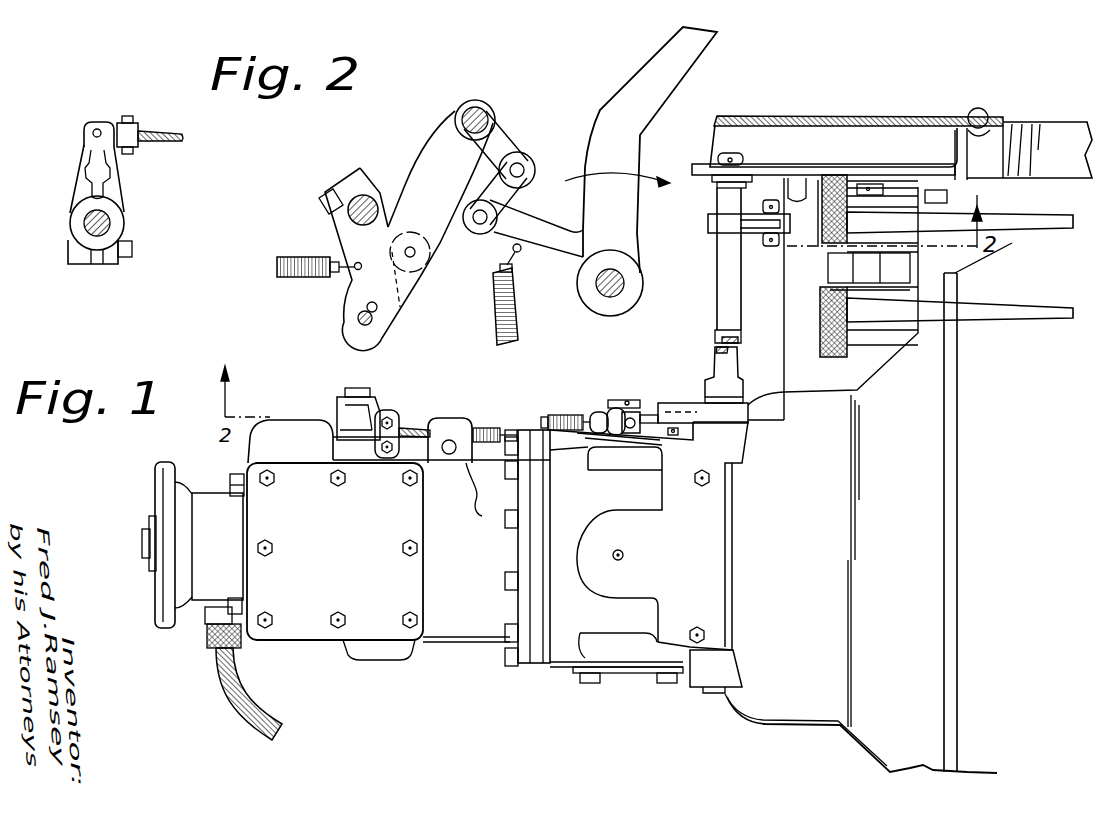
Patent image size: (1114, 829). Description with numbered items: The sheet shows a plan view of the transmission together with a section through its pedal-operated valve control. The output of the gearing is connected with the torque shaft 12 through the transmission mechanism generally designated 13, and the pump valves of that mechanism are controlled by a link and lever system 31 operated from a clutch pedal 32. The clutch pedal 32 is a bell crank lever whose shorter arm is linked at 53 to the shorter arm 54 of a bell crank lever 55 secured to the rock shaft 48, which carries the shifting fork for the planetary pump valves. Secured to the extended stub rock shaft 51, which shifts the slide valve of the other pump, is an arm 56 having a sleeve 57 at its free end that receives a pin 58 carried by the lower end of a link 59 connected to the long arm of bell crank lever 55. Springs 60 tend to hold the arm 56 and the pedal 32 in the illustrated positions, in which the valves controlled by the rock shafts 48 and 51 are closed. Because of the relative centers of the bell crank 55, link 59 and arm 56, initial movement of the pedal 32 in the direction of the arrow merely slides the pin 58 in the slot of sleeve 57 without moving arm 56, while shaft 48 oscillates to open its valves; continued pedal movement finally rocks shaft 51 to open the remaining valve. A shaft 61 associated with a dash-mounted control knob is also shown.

In FIG. 1, the torque shaft 12 is at (145, 535).
In FIG. 1, the transmission mechanism 13 is at (356, 552).
In FIG. 2, the link and lever system 31 is at (392, 139).
In FIG. 2, the clutch pedal 32 is at (638, 83).
In FIG. 1, the clutch pedal 32 is at (1017, 220).
In FIG. 2, the rock shaft 48 is at (475, 110).
In FIG. 1, the rock shaft 48 is at (720, 293).
In FIG. 2, the stub rock shaft 51 is at (352, 200).
In FIG. 1, the stub rock shaft 51 is at (616, 408).
In FIG. 2, the link 53 is at (503, 198).
In FIG. 1, the link 53 is at (750, 237).
In FIG. 2, the shorter arm 54 is at (512, 143).
In FIG. 1, the shorter arm 54 is at (752, 222).
In FIG. 2, the bell crank lever 55 is at (447, 127).
In FIG. 1, the bell crank lever 55 is at (693, 404).
In FIG. 2, the arm 56 is at (353, 238).
In FIG. 1, the arm 56 is at (598, 412).
In FIG. 2, the sleeve 57 is at (365, 305).
In FIG. 2, the pin 58 is at (367, 325).
In FIG. 2, the link 59 is at (408, 285).
In FIG. 1, the link 59 is at (650, 403).
In FIG. 2, the springs 60 is at (277, 261).
In FIG. 1, the springs 60 is at (563, 415).
In FIG. 2, the shaft 61 is at (165, 132).
In FIG. 1, the shaft 61 is at (415, 428).